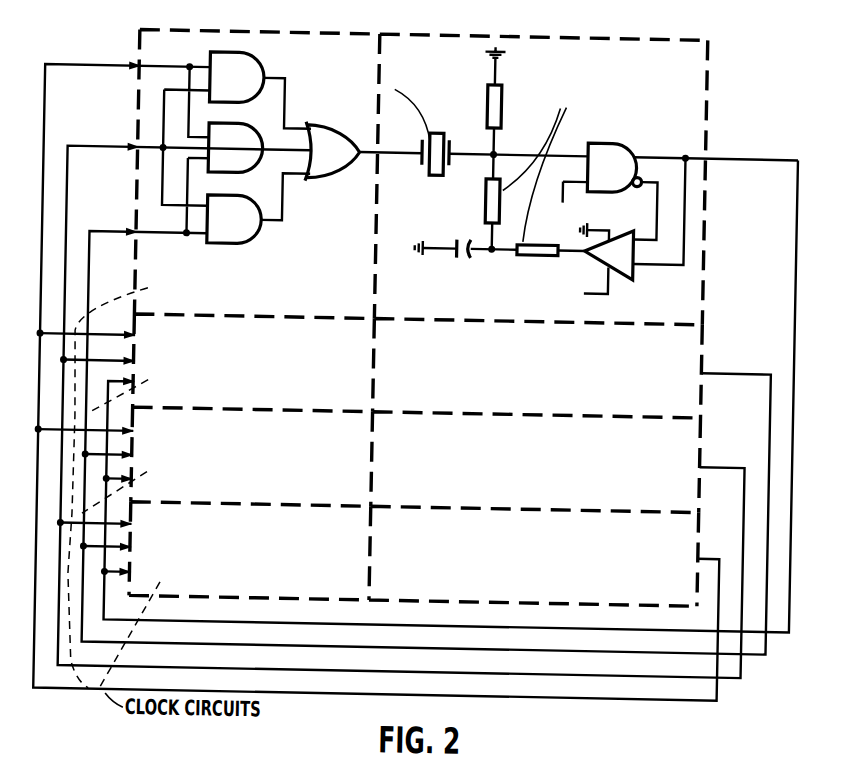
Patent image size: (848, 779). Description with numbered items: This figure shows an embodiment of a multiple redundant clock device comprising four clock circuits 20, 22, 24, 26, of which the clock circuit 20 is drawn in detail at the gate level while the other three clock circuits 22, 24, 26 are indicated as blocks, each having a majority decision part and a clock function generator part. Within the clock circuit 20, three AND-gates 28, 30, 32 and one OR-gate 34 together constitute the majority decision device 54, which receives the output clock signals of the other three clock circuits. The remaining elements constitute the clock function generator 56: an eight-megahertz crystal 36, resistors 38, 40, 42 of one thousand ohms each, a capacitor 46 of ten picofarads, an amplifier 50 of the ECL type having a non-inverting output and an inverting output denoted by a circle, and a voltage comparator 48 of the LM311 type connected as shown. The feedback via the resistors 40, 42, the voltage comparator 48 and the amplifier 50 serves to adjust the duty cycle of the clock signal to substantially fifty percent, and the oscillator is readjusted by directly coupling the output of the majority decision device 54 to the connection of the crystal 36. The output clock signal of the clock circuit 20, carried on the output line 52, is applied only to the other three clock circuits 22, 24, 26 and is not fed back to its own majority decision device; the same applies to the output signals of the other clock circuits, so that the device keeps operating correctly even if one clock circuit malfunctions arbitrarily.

The clock circuit 20 is at (703, 35).
The clock circuit 22 is at (703, 320).
The clock circuit 24 is at (703, 413).
The clock circuit 26 is at (703, 508).
The AND-gate 28 is at (236, 77).
The AND-gate 30 is at (235, 148).
The AND-gate 32 is at (234, 219).
The OR-gate 34 is at (332, 152).
The crystal 36 is at (426, 140).
The resistor 38 is at (495, 126).
The resistor 40 is at (482, 199).
The resistor 42 is at (531, 254).
The capacitor 46 is at (461, 257).
The voltage comparator 48 is at (631, 277).
The amplifier 50 is at (615, 140).
The clock output line 52 is at (703, 153).
The majority decision device 54 is at (306, 256).
The clock function generator 56 is at (607, 78).